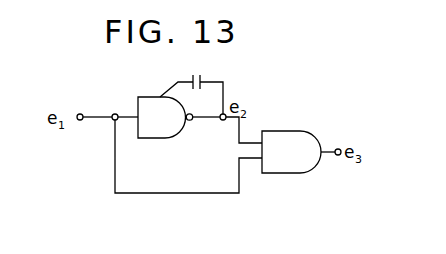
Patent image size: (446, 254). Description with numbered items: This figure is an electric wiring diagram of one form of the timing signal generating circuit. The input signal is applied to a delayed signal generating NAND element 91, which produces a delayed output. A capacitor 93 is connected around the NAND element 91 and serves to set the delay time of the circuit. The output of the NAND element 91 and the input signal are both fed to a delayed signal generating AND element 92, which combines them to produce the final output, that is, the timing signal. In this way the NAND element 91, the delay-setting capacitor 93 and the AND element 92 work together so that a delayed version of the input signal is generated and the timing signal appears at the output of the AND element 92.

The delayed signal generating NAND element 91 is at (157, 139).
The delayed signal generating AND element 92 is at (290, 174).
The capacitor for setting the delay time 93 is at (193, 75).